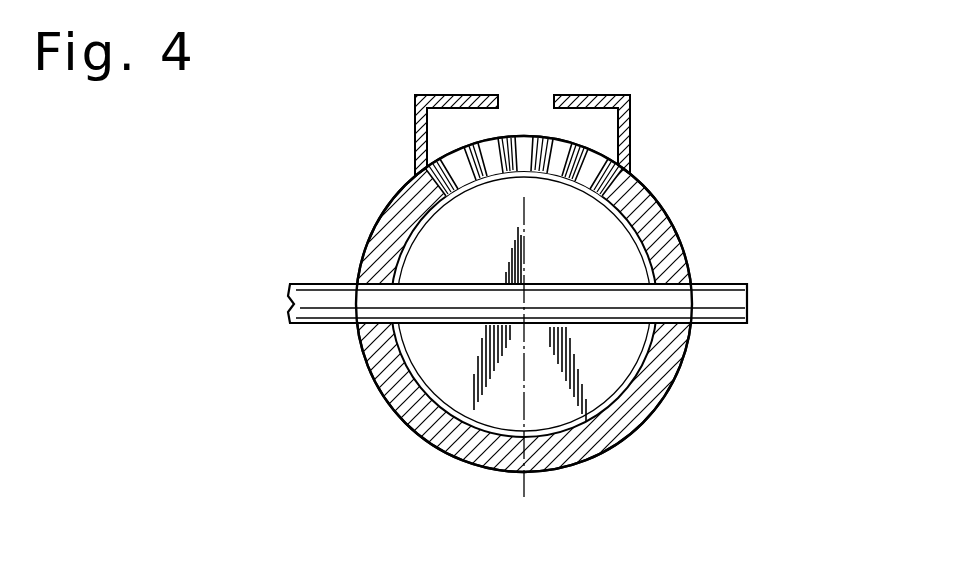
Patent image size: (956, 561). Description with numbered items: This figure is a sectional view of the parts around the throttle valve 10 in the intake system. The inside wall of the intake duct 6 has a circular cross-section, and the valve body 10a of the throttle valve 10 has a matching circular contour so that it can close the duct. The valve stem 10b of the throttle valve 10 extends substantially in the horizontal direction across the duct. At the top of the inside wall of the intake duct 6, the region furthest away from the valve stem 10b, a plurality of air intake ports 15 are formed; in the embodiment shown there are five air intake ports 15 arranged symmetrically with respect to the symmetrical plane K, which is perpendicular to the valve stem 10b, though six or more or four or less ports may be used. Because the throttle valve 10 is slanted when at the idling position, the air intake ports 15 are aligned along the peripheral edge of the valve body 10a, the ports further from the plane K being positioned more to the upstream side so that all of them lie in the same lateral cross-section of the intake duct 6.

The intake duct 6 is at (670, 248).
The throttle valve 10 is at (416, 257).
The valve body 10a is at (433, 377).
The valve stem 10b is at (327, 323).
The air intake ports 15 is at (487, 152).
The symmetrical plane K is at (530, 362).